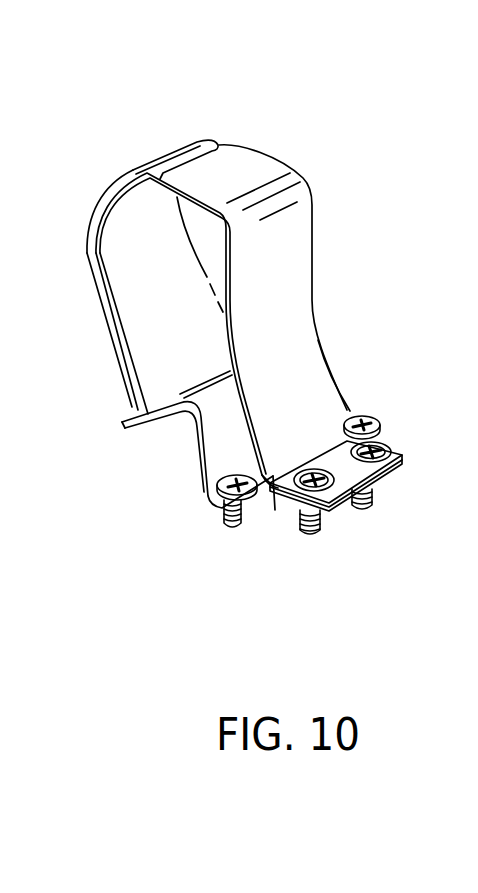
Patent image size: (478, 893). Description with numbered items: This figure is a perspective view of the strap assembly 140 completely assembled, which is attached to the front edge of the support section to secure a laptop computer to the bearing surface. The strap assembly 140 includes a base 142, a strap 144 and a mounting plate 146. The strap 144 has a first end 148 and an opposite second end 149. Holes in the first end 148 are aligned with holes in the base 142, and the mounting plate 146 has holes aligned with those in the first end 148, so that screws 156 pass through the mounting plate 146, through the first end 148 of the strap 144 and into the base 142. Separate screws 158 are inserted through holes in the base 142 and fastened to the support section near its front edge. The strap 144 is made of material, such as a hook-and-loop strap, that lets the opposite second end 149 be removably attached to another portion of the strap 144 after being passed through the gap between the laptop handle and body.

The strap assembly 140 is at (341, 100).
The base 142 is at (197, 460).
The strap 144 is at (310, 300).
The mounting plate 146 is at (350, 467).
The first end 148 is at (268, 498).
The opposite second end 149 is at (193, 147).
The screws 156 is at (367, 512).
The screws 158 is at (367, 417).